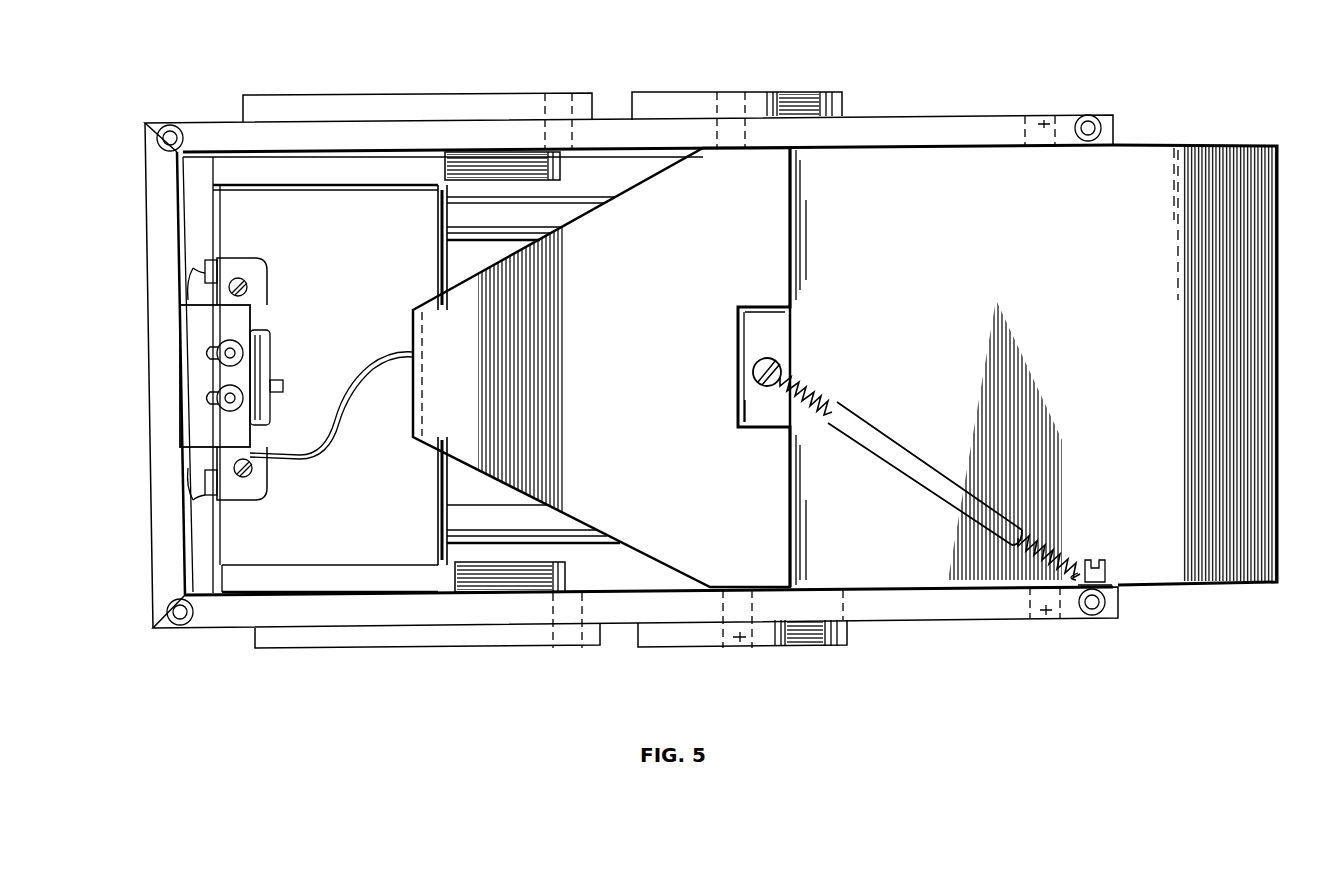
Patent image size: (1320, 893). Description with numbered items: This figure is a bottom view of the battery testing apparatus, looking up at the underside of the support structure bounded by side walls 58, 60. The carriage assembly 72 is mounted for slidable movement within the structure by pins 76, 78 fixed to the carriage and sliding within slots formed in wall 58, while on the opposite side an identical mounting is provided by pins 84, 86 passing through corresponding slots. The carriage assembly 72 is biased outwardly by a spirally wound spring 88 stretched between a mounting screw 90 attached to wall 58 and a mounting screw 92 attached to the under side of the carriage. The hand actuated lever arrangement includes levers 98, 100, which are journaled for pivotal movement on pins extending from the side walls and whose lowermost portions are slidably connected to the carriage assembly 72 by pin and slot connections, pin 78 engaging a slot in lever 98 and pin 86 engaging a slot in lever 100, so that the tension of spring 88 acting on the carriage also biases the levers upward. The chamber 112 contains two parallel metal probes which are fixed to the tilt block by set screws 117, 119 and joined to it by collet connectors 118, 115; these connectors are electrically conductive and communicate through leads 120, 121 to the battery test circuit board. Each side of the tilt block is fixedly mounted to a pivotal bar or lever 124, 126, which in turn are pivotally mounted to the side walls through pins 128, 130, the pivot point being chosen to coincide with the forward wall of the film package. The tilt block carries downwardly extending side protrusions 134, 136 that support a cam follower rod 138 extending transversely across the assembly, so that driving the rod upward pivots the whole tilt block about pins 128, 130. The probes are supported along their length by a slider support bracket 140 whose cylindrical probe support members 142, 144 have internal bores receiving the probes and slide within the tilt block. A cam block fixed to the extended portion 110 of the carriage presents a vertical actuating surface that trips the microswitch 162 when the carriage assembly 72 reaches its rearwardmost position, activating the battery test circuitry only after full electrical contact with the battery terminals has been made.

The side wall 58 is at (228, 627).
The side wall 60 is at (222, 128).
The carriage assembly 72 is at (1192, 160).
The pin 76 is at (1045, 116).
The pin 78 is at (725, 92).
The pin 84 is at (1048, 620).
The pin 86 is at (730, 648).
The spirally wound spring 88 is at (828, 392).
The mounting screw 90 is at (1112, 570).
The mounting screw 92 is at (770, 358).
The lever 98 is at (800, 90).
The lever 100 is at (812, 646).
The extended portion of carriage 110 is at (472, 298).
The chamber 112 is at (333, 339).
The collet connector 115 is at (205, 490).
The set screw 117 is at (252, 280).
The collet connector 118 is at (205, 265).
The set screw 119 is at (250, 478).
The lead 120 is at (195, 290).
The lead 121 is at (195, 470).
The pivotal bar or lever 124 is at (430, 108).
The pivotal bar or lever 126 is at (412, 648).
The pin 128 is at (567, 100).
The pin 130 is at (565, 648).
The side protrusion 134 is at (337, 178).
The side protrusion 136 is at (320, 568).
The cam follower rod 138 is at (435, 220).
The slider support bracket 140 is at (566, 545).
The probe support member 142 is at (566, 210).
The probe support member 144 is at (533, 510).
The microswitch 162 is at (264, 372).